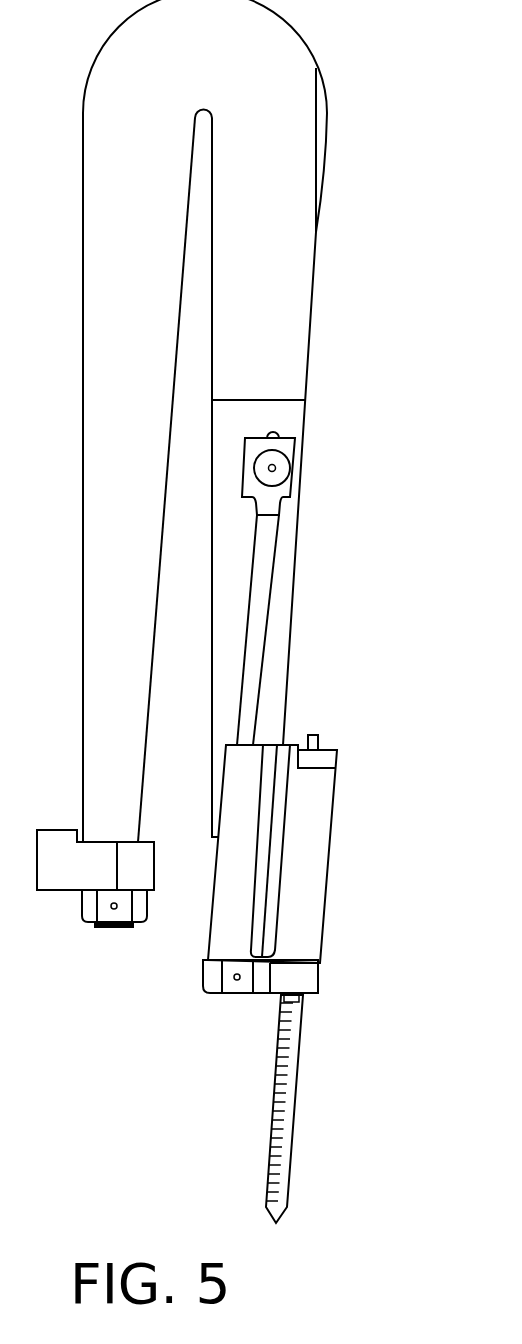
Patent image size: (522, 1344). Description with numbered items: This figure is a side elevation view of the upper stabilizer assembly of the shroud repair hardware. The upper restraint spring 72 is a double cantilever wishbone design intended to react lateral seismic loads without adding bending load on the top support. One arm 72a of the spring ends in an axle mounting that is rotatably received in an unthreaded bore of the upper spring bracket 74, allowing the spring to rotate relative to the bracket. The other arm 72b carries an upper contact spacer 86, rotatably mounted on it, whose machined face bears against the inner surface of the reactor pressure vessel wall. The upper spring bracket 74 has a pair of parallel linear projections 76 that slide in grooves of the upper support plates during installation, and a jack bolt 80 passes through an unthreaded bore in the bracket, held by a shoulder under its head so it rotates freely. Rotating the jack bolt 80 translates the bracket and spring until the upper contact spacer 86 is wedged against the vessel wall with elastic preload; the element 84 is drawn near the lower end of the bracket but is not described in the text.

The upper restraint spring 72 is at (283, 124).
The arm of spring 72a is at (277, 712).
The other arm of spring 72b is at (105, 655).
The upper spring bracket 74 is at (335, 793).
The parallel linear projections 76 is at (287, 835).
The jack bolt 80 is at (297, 1122).
The lower mounting block 84 is at (318, 978).
The upper contact spacer 86 is at (62, 878).